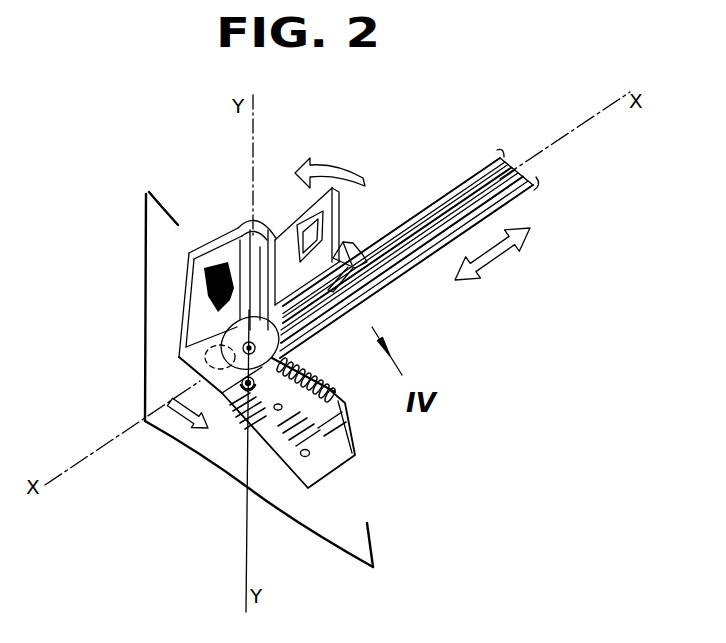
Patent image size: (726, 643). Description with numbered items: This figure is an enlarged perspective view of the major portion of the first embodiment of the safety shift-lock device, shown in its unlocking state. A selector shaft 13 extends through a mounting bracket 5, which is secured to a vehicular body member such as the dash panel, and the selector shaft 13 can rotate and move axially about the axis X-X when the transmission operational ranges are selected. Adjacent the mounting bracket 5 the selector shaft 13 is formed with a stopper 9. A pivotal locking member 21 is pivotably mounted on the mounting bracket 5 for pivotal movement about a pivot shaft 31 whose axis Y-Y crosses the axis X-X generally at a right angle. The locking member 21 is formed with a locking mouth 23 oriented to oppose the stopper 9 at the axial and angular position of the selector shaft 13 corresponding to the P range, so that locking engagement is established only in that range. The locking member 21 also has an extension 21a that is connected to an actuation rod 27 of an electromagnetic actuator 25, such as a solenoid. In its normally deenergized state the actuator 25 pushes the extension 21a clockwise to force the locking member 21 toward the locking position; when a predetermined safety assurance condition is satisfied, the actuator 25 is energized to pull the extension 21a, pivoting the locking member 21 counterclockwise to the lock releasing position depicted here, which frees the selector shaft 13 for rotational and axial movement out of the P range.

The mounting bracket 5 is at (333, 537).
The stopper 9 is at (358, 253).
The selector shaft 13 is at (427, 245).
The pivotal locking member 21 is at (313, 212).
The extension 21a is at (152, 373).
The locking mouth 23 is at (313, 212).
The electromagnetic actuator 25 is at (335, 466).
The actuation rod 27 is at (226, 450).
The pivot shaft 31 is at (243, 315).